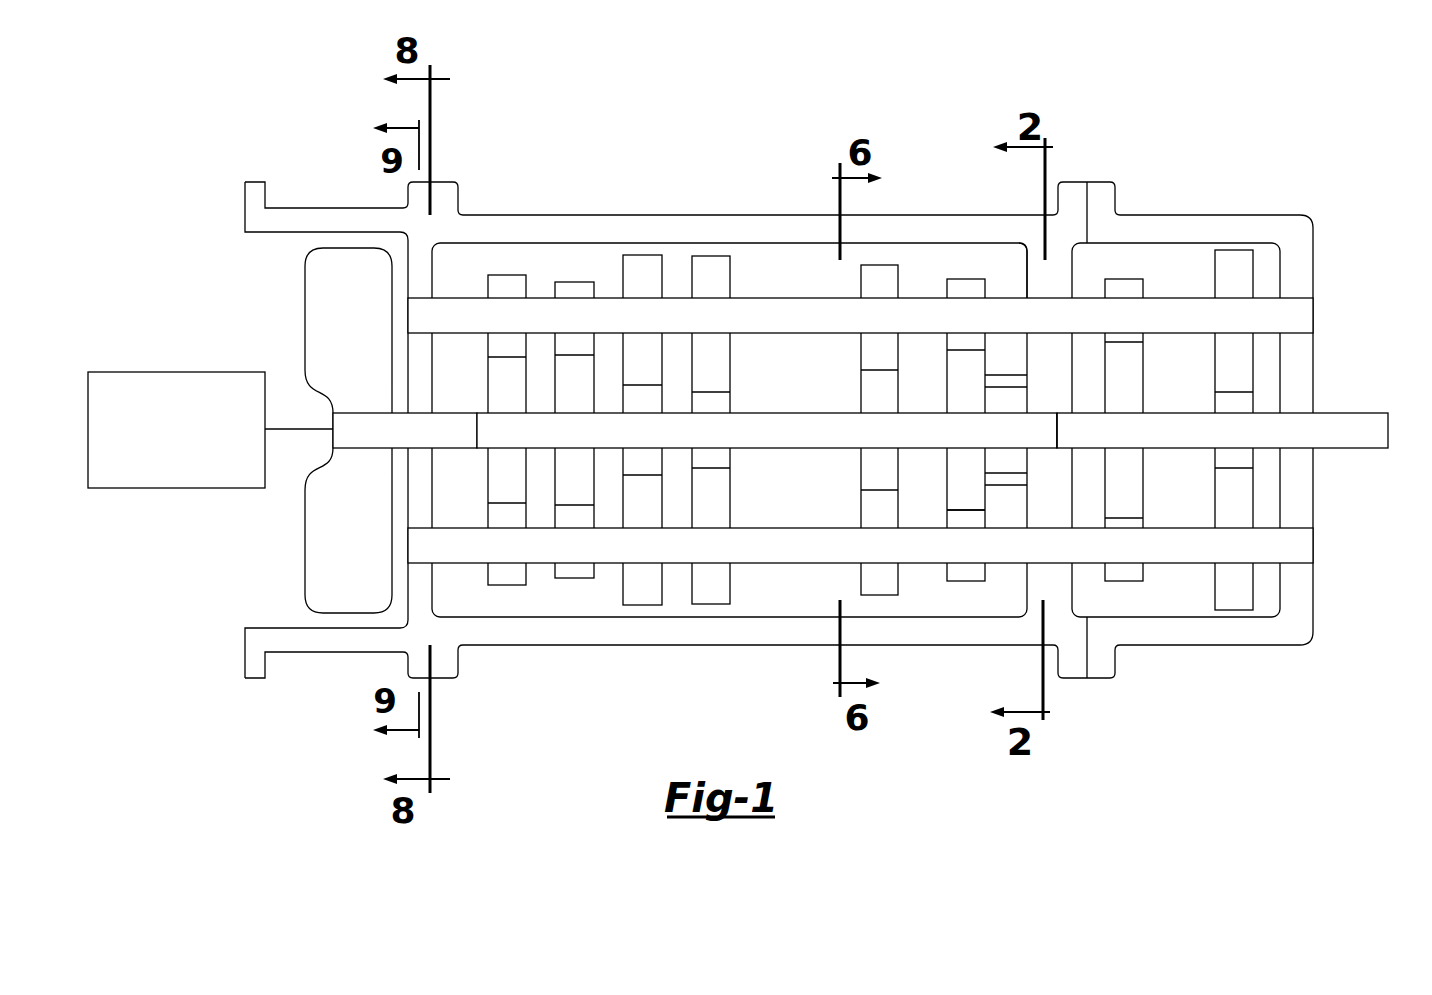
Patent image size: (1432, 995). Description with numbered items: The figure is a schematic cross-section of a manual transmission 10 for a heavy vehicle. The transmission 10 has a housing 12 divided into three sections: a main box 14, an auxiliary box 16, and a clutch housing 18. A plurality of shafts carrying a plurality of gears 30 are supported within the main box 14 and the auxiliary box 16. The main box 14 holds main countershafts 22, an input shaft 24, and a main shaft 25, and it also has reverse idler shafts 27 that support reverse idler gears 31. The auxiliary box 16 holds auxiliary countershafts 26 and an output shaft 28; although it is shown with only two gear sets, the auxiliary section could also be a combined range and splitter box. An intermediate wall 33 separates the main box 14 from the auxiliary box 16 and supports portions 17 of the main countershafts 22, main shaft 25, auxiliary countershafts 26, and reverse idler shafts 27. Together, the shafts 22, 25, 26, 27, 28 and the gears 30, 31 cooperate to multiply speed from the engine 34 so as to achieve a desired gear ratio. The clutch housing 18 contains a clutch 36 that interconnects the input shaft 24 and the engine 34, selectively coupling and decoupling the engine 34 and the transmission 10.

The transmission 10 is at (807, 353).
The housing 12 is at (762, 358).
The main box 14 is at (623, 212).
The auxiliary box 16 is at (1214, 212).
The portions of the shafts 17 is at (1058, 428).
The clutch housing 18 is at (309, 191).
The main countershafts 22 is at (457, 308).
The input shaft 24 is at (453, 434).
The main shaft 25 is at (744, 431).
The auxiliary countershafts 26 is at (1303, 318).
The reverse idler shafts 27 is at (1012, 477).
The output shaft 28 is at (1358, 425).
The gears 30 is at (708, 268).
The reverse idler gears 31 is at (965, 497).
The intermediate wall 33 is at (1037, 280).
The engine 34 is at (128, 372).
The clutch 36 is at (328, 562).